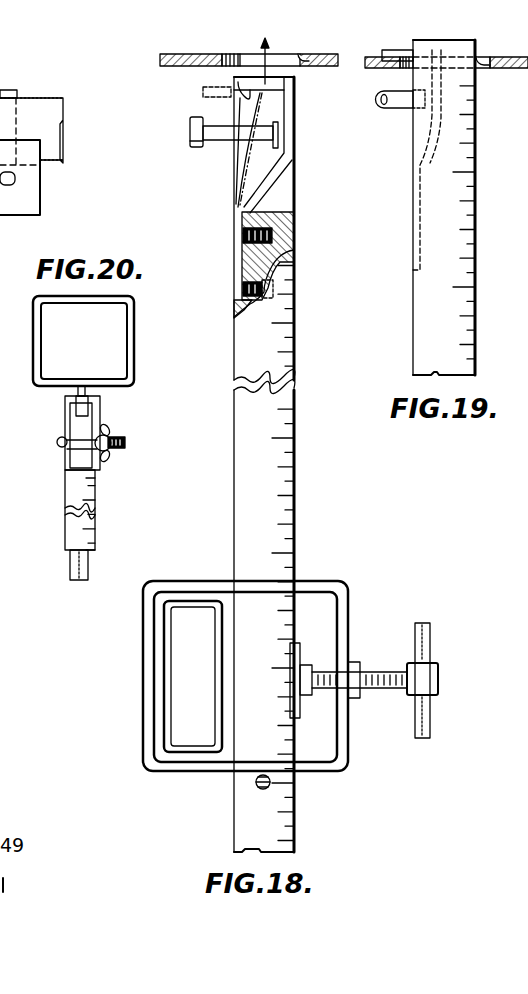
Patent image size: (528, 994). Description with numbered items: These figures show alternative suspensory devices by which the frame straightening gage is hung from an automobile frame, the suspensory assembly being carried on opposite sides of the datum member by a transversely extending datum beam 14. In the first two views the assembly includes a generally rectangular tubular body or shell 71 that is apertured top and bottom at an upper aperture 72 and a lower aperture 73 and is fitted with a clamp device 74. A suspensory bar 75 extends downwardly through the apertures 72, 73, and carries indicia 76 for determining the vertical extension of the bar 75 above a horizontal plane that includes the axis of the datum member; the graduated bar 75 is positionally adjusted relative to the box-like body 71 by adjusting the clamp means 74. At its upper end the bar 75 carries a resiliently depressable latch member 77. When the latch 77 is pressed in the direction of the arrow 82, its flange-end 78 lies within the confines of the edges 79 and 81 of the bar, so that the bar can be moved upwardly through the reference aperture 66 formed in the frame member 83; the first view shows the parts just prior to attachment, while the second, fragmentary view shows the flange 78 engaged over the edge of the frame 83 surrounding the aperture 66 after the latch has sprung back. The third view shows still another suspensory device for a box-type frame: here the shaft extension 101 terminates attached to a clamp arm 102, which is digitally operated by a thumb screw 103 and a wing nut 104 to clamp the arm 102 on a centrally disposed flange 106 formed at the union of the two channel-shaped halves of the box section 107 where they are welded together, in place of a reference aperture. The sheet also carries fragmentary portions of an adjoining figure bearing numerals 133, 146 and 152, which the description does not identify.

In FIG. 18, the datum beam 14 is at (151, 654).
In FIG. 18, the reference aperture 66 is at (304, 58).
In FIG. 19, the reference aperture 66 is at (479, 62).
In FIG. 18, the tubular body 71 is at (344, 583).
In FIG. 18, the upper aperture 72 is at (295, 582).
In FIG. 18, the lower aperture 73 is at (297, 778).
In FIG. 18, the clamp device 74 is at (384, 671).
In FIG. 18, the suspensory bar 75 is at (287, 491).
In FIG. 19, the suspensory bar 75 is at (465, 172).
In FIG. 18, the indicia 76 is at (285, 442).
In FIG. 19, the indicia 76 is at (461, 258).
In FIG. 18, the resiliently depressable latch member 77 is at (264, 188).
In FIG. 19, the resiliently depressable latch member 77 is at (416, 141).
In FIG. 18, the flange-end 78 is at (249, 108).
In FIG. 19, the flange-end 78 is at (389, 50).
In FIG. 18, the bar edge 79 is at (232, 168).
In FIG. 18, the bar edge 81 is at (285, 178).
In FIG. 18, the arrow 82 is at (196, 148).
In FIG. 19, the arrow 82 is at (382, 106).
In FIG. 18, the frame member 83 is at (198, 54).
In FIG. 20, the shaft extension 101 is at (70, 572).
In FIG. 20, the clamp arm 102 is at (102, 414).
In FIG. 20, the thumb screw 103 is at (126, 437).
In FIG. 20, the wing nut 104 is at (110, 450).
In FIG. 20, the flange 106 is at (79, 416).
In FIG. 20, the box section 107 is at (132, 336).
In FIG. 20, the housing 133 is at (0, 58).
In FIG. 20, the member 146 is at (0, 680).
In FIG. 20, the member 152 is at (0, 768).